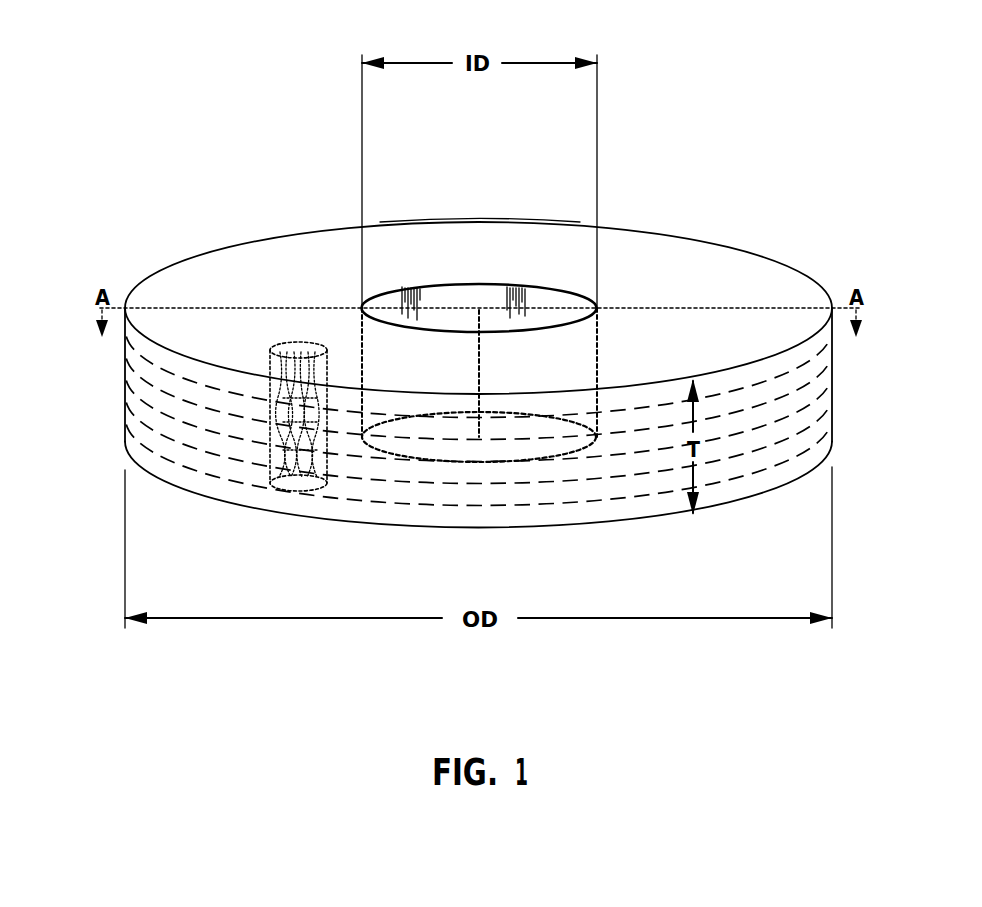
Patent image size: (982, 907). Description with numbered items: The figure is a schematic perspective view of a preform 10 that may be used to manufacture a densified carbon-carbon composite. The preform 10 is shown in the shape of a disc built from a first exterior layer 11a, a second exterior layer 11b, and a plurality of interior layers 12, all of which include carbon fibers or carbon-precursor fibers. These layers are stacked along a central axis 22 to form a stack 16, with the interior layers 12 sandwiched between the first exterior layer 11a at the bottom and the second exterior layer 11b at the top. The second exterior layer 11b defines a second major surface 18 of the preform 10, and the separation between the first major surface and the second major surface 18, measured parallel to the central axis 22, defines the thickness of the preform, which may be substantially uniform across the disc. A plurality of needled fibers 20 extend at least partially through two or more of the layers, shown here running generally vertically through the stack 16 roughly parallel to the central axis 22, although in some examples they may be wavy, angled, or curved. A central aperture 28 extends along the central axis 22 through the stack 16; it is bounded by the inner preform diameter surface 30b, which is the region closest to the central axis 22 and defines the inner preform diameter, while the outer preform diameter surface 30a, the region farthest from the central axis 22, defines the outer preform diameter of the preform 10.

The preform 10 is at (157, 70).
The first exterior layer 11a is at (138, 456).
The second exterior layer 11b is at (138, 339).
The plurality of interior layers 12 is at (135, 350).
The stack 16 is at (157, 272).
The second major surface 18 is at (636, 228).
The needled fibers 20 is at (282, 463).
The central axis 22 is at (478, 385).
The central aperture 28 is at (466, 272).
The outer preform diameter surface 30a is at (833, 453).
The inner preform diameter surface 30b is at (452, 283).